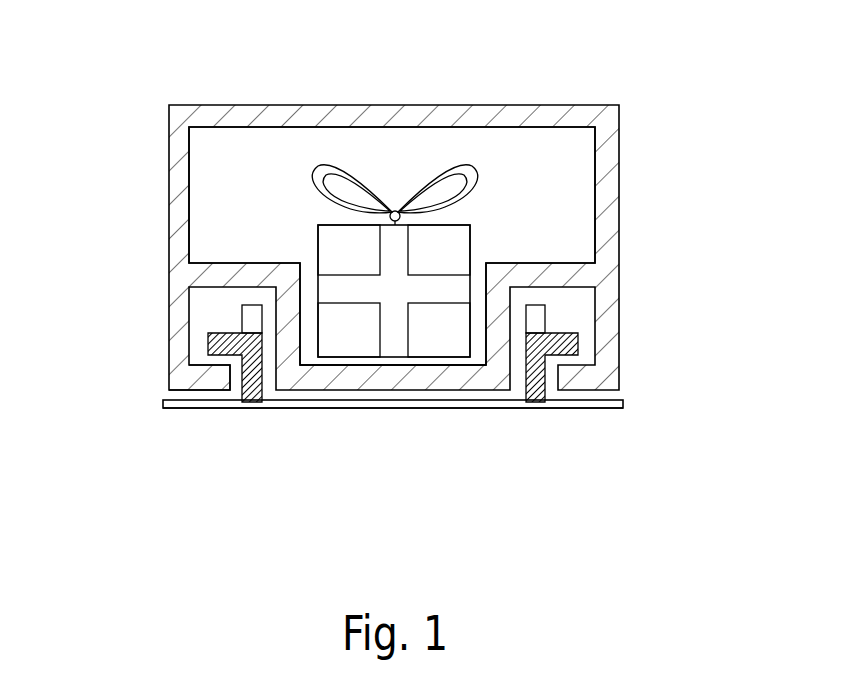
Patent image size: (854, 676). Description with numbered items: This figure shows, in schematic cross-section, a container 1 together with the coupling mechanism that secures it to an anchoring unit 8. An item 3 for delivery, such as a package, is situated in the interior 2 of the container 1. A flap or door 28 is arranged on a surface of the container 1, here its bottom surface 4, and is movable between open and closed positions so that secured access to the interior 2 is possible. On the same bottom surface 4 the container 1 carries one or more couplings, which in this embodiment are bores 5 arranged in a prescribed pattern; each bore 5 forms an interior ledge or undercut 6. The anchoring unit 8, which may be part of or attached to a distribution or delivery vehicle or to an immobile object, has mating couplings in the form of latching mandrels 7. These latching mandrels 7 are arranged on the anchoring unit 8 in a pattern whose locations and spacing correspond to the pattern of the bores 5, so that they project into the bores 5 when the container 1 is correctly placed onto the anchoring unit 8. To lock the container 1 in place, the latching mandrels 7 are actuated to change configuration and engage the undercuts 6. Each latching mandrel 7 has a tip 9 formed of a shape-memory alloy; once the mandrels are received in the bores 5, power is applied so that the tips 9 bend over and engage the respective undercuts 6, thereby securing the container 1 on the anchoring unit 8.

The container 1 is at (397, 263).
The interior 2 is at (507, 213).
The item 3 is at (345, 243).
The bottom surface 4 is at (602, 395).
The bores 5 is at (600, 333).
The undercut 6 is at (201, 362).
The latching mandrels 7 is at (237, 387).
The anchoring unit 8 is at (422, 411).
The tip 9 is at (565, 328).
The flap or door 28 is at (342, 390).